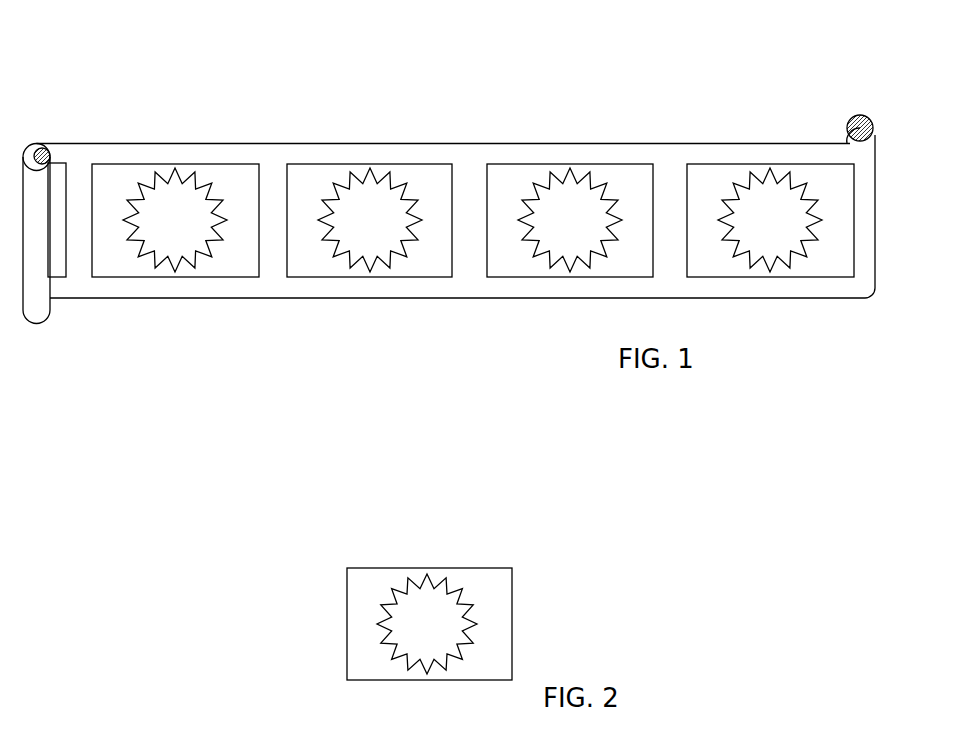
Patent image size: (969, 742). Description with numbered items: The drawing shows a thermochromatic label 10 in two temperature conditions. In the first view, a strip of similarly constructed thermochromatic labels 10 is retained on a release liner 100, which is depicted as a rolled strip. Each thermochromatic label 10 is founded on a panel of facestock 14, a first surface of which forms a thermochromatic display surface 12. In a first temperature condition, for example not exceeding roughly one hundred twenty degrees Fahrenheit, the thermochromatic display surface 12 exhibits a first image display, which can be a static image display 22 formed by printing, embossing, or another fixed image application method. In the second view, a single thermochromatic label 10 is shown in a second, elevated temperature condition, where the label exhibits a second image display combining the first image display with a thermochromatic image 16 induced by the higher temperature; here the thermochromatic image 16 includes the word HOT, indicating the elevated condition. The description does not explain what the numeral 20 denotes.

In FIG. 1, the release liner 100 is at (500, 143).
In FIG. 1, the thermochromatic label 10 is at (343, 150).
In FIG. 2, the thermochromatic label 10 is at (394, 550).
In FIG. 1, the thermochromatic display surface 12 is at (378, 183).
In FIG. 2, the thermochromatic display surface 12 is at (455, 590).
In FIG. 1, the panel of facestock 14 is at (404, 277).
In FIG. 2, the panel of facestock 14 is at (347, 602).
In FIG. 2, the thermochromatic image 16 is at (470, 605).
In FIG. 2, the indicator outline 20 is at (397, 660).
In FIG. 1, the static image display 22 is at (345, 258).